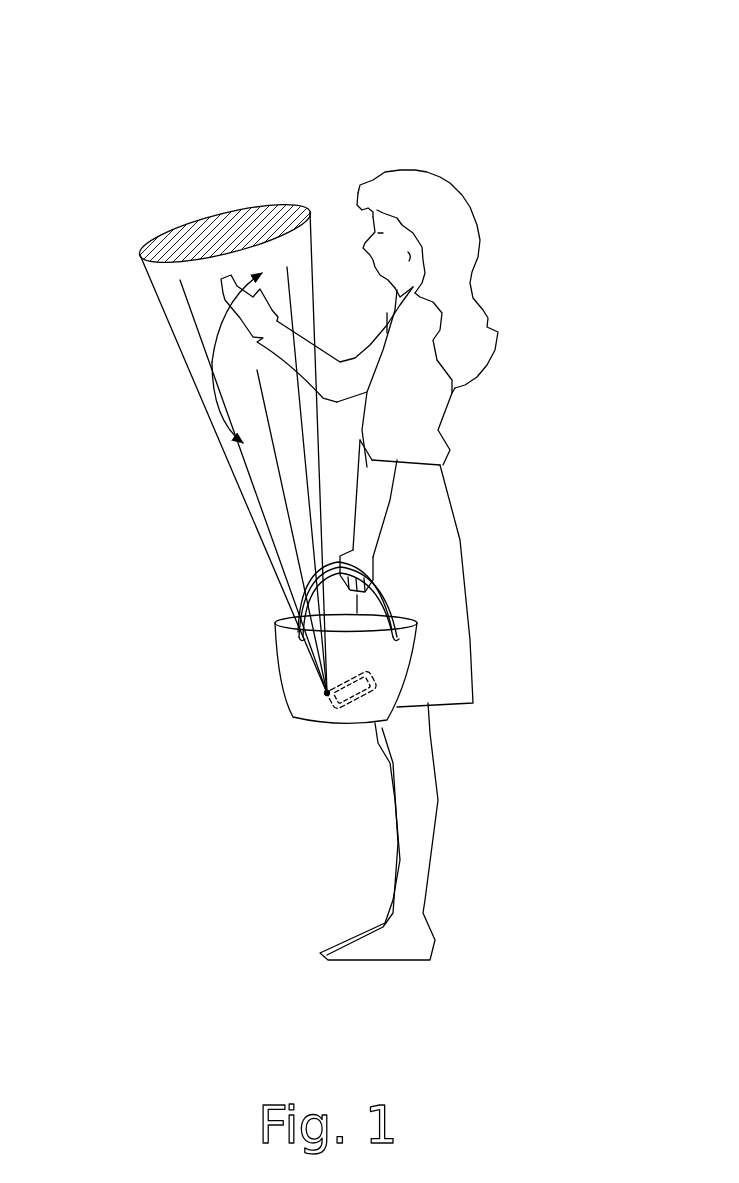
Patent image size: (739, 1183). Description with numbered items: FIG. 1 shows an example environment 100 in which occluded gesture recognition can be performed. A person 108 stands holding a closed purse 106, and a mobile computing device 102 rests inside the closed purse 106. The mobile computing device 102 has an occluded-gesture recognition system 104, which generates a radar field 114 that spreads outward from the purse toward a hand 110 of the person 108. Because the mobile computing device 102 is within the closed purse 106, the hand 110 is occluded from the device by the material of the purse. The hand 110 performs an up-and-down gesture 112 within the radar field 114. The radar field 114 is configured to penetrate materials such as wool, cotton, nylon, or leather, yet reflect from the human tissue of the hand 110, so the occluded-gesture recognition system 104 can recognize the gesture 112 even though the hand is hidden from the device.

The environment 100 is at (615, 57).
The mobile computing device 102 is at (367, 700).
The occluded-gesture recognition system 104 is at (330, 700).
The closed purse 106 is at (293, 650).
The person 108 is at (399, 988).
The hand 110 is at (206, 314).
The up-and-down gesture 112 is at (212, 380).
The radar field 114 is at (250, 222).